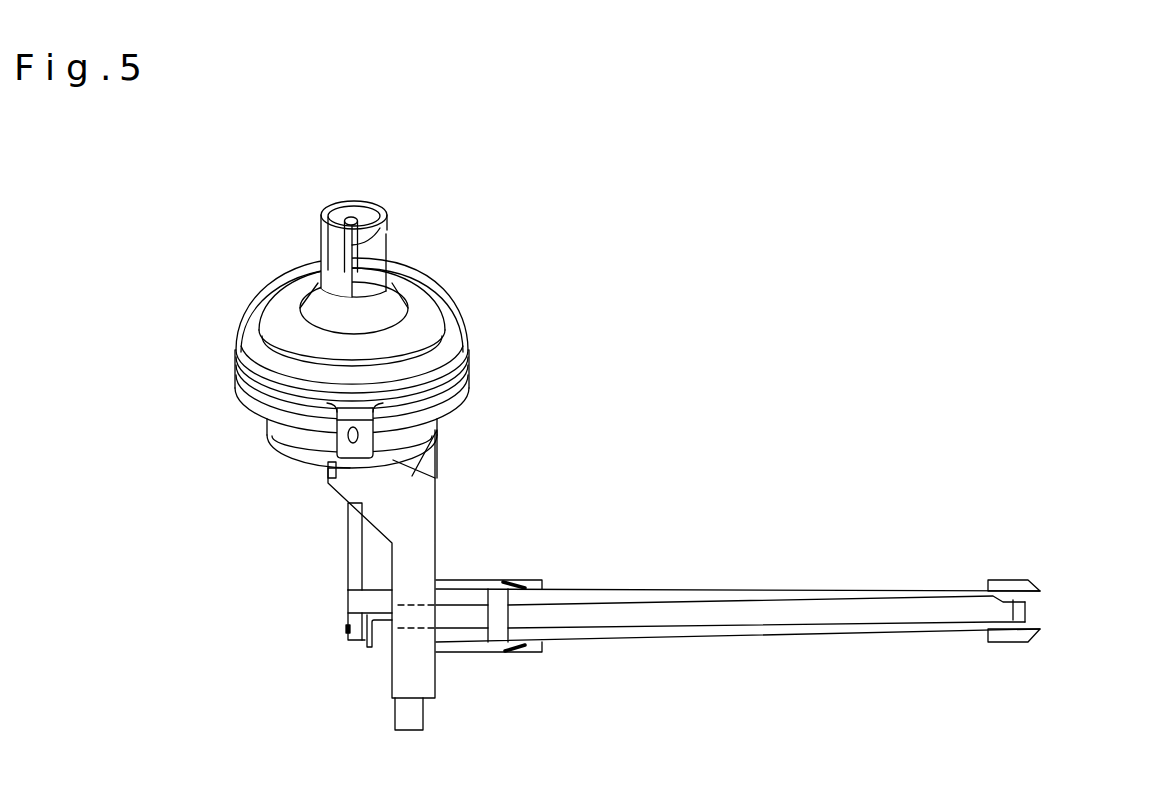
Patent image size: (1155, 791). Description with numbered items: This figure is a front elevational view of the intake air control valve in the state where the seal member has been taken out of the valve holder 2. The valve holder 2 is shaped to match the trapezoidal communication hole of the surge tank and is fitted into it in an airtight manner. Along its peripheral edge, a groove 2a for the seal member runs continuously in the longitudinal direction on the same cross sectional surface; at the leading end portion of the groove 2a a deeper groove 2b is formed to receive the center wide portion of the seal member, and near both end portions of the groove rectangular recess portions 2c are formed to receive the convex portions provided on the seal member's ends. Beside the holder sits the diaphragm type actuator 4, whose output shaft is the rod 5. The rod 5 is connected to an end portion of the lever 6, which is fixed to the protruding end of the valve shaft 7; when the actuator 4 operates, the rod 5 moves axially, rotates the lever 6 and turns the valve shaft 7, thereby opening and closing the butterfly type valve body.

The valve holder 2 is at (793, 616).
The groove for a seal member 2a is at (828, 613).
The deeper groove 2b is at (1028, 608).
The rectangular recess portions 2c is at (498, 588).
The diaphragm type actuator 4 is at (465, 343).
The rod 5 is at (350, 540).
The lever 6 is at (360, 644).
The valve shaft 7 is at (413, 598).